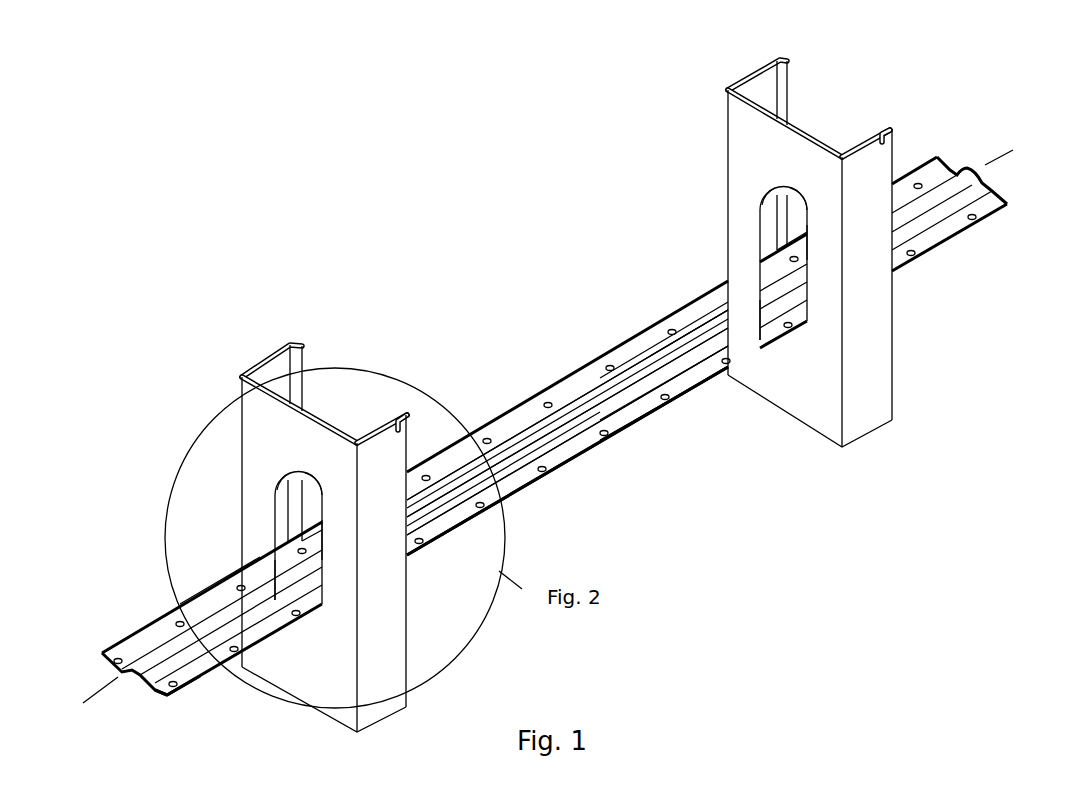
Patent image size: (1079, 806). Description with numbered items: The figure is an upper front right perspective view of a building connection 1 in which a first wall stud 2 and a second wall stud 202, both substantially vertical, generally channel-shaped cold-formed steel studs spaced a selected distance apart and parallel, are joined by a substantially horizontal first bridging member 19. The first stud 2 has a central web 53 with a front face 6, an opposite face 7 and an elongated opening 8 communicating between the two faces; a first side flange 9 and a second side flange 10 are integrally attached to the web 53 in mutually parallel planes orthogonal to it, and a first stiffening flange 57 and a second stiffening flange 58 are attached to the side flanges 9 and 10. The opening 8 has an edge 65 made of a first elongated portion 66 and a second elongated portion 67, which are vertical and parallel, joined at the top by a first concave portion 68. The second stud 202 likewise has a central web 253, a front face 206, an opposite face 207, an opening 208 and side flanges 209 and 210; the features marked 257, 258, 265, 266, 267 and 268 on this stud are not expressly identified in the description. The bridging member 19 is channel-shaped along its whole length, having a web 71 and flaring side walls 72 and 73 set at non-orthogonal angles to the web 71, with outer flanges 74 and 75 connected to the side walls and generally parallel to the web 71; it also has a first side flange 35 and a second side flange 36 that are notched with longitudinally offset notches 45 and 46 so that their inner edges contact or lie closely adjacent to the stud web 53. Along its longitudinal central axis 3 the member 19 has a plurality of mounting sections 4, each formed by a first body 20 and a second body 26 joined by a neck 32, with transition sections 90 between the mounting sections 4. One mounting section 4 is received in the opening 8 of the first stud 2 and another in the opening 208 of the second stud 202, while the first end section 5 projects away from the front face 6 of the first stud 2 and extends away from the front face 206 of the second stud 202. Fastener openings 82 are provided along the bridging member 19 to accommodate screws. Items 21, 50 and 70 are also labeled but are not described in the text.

The building connection 1 is at (582, 104).
The first wall stud 2 is at (293, 339).
The longitudinal central axis 3 is at (97, 689).
The mounting section 4 is at (260, 565).
The first end section 5 is at (160, 704).
The front face 6 is at (247, 448).
The opposite face 7 is at (341, 421).
The elongated opening 8 is at (312, 500).
The first side flange 9 is at (266, 353).
The second side flange 10 is at (383, 429).
The first bridging member 19 is at (202, 589).
The first body 20 is at (266, 571).
The end bump of channel 21 is at (982, 179).
The second body 26 is at (289, 565).
The neck 32 is at (657, 361).
The first side flange 35 is at (546, 394).
The second side flange 36 is at (583, 453).
The notch 45 is at (156, 643).
The notch 46 is at (695, 386).
The channel end 50 is at (1000, 191).
The central web 53 is at (314, 409).
The first stiffening flange 57 is at (304, 361).
The second stiffening flange 58 is at (399, 410).
The edge 65 is at (284, 469).
The first elongated portion 66 is at (285, 516).
The second elongated portion 67 is at (318, 524).
The first concave portion 68 is at (311, 482).
The channel web portion 70 is at (722, 328).
The web 71 is at (586, 389).
The flaring side wall 72 is at (127, 669).
The flaring side wall 73 is at (653, 411).
The outer flange 74 is at (688, 324).
The outer flange 75 is at (753, 354).
The fastener openings 82 is at (114, 654).
The transition sections 90 is at (482, 463).
The second wall stud 202 is at (786, 52).
The front face 206 is at (733, 126).
The opposite face 207 is at (813, 133).
The opening 208 is at (803, 208).
The first side flange 209 is at (754, 67).
The second side flange 210 is at (880, 126).
The central web 253 is at (799, 118).
The second stud left lip 257 is at (791, 73).
The second stud right flange 258 is at (894, 126).
The second slot top 265 is at (770, 181).
The lip visible through second slot 266 is at (768, 219).
The second slot side edge 267 is at (802, 234).
The second slot arch 268 is at (797, 192).